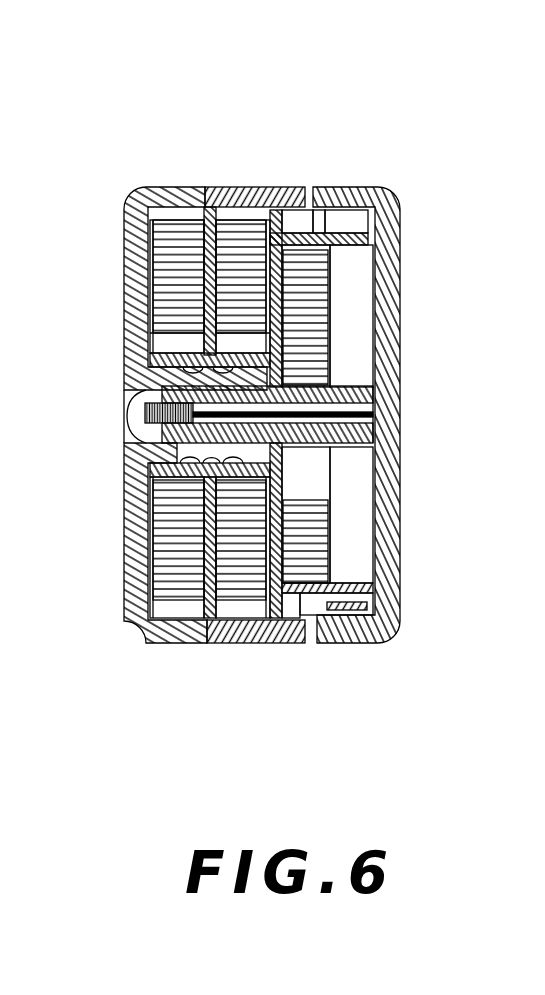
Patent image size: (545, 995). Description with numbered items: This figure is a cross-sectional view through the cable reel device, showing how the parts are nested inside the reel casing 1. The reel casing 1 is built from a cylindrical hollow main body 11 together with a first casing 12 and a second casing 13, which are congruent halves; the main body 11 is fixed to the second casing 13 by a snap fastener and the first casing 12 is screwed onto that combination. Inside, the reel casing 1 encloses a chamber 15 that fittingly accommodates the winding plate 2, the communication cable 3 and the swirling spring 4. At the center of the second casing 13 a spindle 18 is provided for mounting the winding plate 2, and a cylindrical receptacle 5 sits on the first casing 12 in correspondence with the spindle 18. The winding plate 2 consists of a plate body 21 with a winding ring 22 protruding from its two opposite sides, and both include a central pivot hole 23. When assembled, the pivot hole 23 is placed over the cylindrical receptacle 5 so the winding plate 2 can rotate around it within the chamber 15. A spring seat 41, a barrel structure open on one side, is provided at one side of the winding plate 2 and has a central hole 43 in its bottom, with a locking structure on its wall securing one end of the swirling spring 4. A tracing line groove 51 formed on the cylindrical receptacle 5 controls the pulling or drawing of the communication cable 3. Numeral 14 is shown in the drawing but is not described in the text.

The reel casing 1 is at (285, 392).
The winding plate 2 is at (149, 209).
The communication cable 3 is at (157, 562).
The swirling spring 4 is at (369, 298).
The cylindrical receptacle 5 is at (167, 443).
The main body 11 is at (222, 214).
The first casing 12 is at (140, 187).
The second casing 13 is at (412, 188).
The shaft end 14 is at (130, 406).
The chamber 15 is at (237, 602).
The spindle 18 is at (258, 436).
The plate body 21 is at (207, 252).
The winding ring 22 is at (180, 355).
The central pivot hole 23 is at (255, 353).
The spring seat 41 is at (283, 360).
The central hole 43 is at (280, 386).
The tracing line groove 51 is at (283, 500).